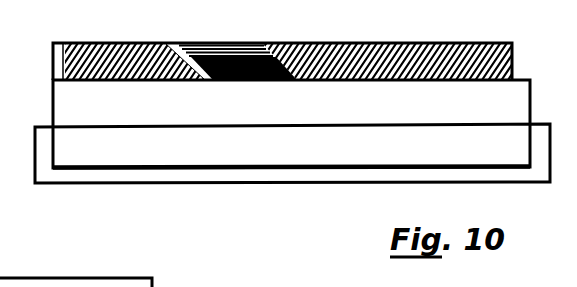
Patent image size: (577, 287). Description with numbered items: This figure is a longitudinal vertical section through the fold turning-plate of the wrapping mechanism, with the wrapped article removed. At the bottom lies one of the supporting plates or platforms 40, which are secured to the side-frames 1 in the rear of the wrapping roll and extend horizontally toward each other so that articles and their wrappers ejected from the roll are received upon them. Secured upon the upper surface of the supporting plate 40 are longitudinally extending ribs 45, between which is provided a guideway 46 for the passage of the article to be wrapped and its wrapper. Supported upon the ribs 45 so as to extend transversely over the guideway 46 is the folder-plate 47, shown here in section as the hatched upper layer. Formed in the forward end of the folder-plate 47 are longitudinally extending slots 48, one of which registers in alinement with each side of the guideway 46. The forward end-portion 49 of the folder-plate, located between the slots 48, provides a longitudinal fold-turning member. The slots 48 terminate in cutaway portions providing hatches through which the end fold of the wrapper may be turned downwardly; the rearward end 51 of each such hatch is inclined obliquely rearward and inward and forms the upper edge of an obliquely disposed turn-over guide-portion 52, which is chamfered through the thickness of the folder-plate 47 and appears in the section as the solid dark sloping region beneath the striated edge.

The supporting plates or platforms 40 is at (186, 158).
The longitudinally extending ribs 45 is at (534, 72).
The guideway 46 is at (291, 124).
The folder-plate 47 is at (108, 52).
The longitudinally extending slots 48 is at (146, 47).
The forward end-portion 49 is at (62, 66).
The rearward end 51 is at (211, 43).
The turn-over guide-portion 52 is at (234, 52).
The side-frames 1 is at (88, 286).